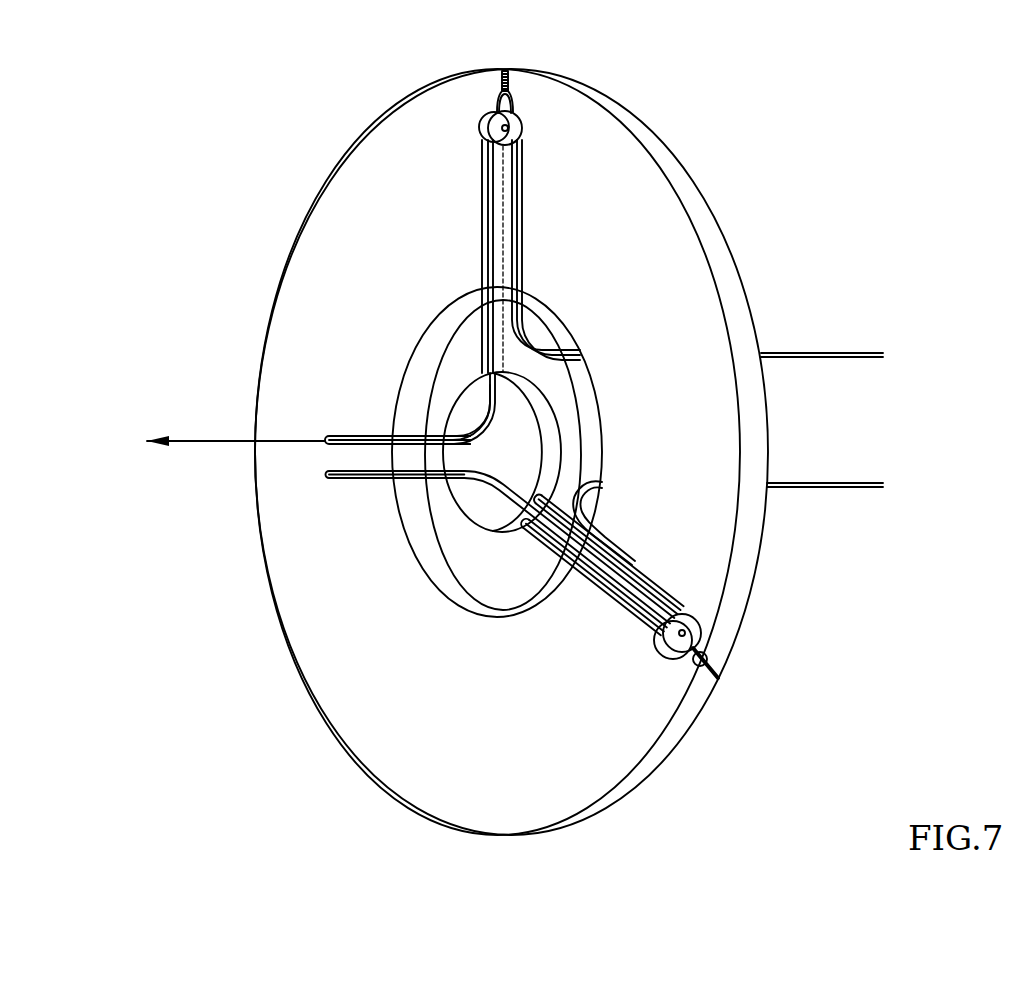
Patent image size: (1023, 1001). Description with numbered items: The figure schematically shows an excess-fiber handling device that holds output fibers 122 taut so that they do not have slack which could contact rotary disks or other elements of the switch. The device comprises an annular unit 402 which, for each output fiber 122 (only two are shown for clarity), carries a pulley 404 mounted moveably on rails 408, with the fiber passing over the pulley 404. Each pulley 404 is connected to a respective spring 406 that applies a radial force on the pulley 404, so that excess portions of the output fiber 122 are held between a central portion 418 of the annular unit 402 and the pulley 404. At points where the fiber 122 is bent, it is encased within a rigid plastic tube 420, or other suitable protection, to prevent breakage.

The annular unit 402 is at (751, 568).
The pulley 404 is at (516, 128).
The spring 406 is at (512, 80).
The rails 408 is at (528, 228).
The central portion 418 is at (523, 447).
The rigid plastic tube 420 is at (538, 334).
The output fiber 122 is at (226, 441).